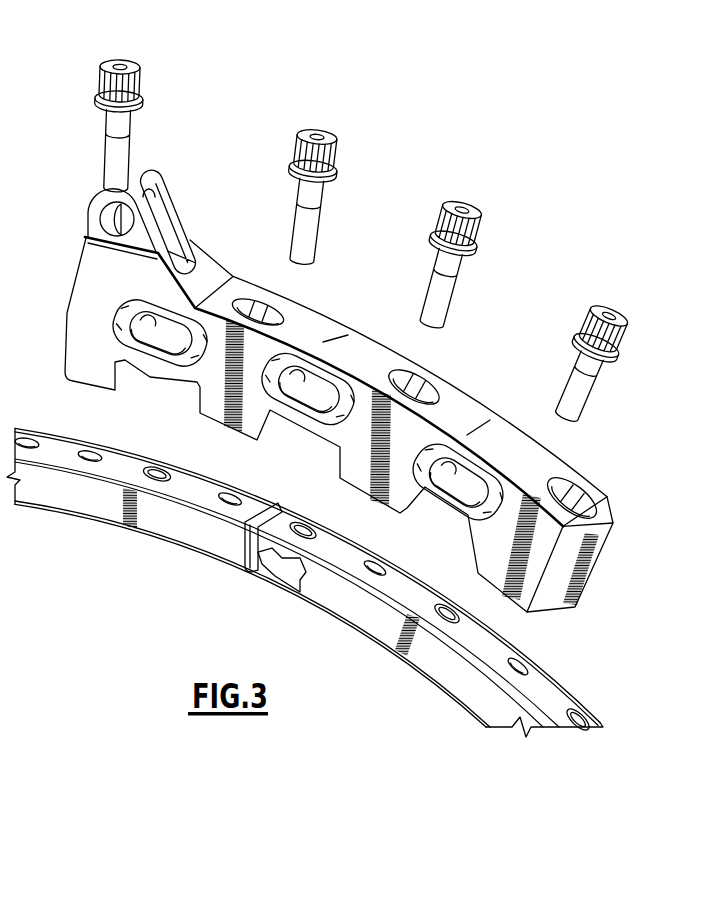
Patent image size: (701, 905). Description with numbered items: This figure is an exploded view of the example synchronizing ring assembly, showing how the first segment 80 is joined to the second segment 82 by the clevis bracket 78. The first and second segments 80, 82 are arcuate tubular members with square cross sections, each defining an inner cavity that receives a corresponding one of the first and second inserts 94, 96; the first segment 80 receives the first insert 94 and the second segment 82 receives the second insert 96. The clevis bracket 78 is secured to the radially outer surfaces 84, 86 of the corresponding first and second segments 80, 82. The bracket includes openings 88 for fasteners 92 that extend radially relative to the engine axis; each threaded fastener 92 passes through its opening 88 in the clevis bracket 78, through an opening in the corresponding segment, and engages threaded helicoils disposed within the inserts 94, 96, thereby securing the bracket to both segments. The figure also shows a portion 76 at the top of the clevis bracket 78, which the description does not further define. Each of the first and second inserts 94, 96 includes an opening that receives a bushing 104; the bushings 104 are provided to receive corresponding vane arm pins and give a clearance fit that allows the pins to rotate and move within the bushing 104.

The mounting lug with brace 76 is at (194, 192).
The clevis bracket 78 is at (536, 466).
The first segment 80 is at (114, 514).
The second segment 82 is at (417, 655).
The radially outer surface 84 is at (54, 429).
The radially outer surface 86 is at (406, 577).
The openings 88 is at (272, 304).
The fasteners 92 is at (141, 80).
The first insert 94 is at (240, 560).
The second insert 96 is at (290, 582).
The bushing 104 is at (161, 464).